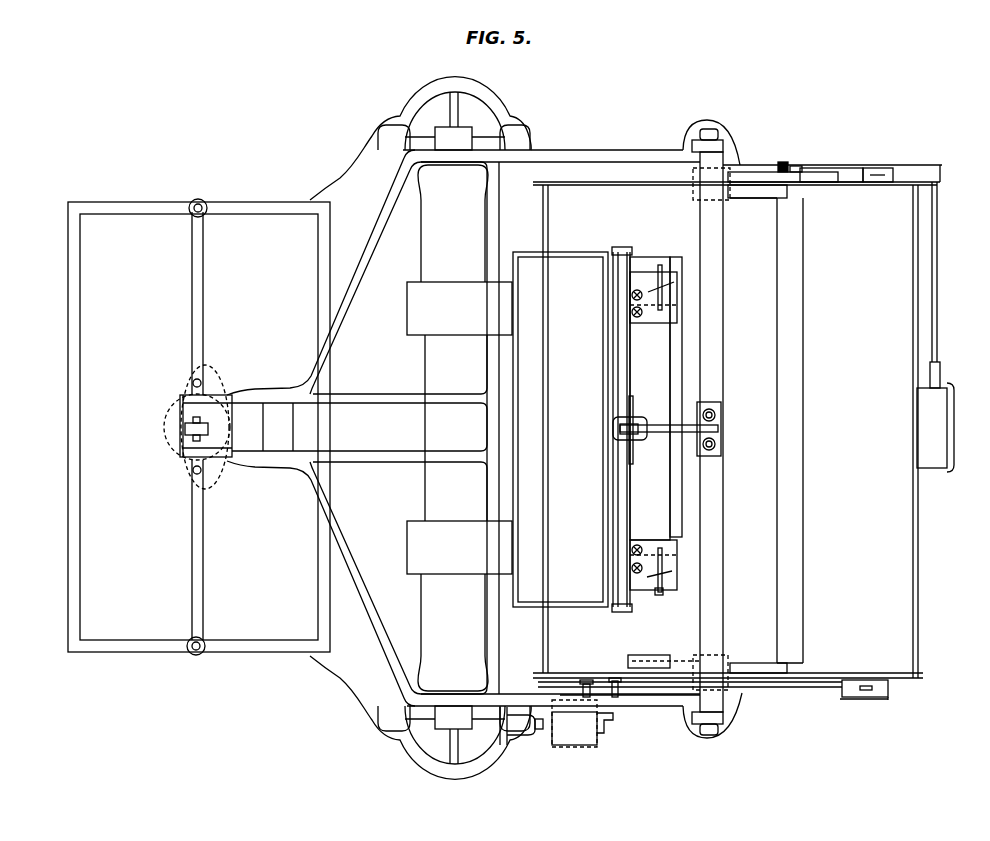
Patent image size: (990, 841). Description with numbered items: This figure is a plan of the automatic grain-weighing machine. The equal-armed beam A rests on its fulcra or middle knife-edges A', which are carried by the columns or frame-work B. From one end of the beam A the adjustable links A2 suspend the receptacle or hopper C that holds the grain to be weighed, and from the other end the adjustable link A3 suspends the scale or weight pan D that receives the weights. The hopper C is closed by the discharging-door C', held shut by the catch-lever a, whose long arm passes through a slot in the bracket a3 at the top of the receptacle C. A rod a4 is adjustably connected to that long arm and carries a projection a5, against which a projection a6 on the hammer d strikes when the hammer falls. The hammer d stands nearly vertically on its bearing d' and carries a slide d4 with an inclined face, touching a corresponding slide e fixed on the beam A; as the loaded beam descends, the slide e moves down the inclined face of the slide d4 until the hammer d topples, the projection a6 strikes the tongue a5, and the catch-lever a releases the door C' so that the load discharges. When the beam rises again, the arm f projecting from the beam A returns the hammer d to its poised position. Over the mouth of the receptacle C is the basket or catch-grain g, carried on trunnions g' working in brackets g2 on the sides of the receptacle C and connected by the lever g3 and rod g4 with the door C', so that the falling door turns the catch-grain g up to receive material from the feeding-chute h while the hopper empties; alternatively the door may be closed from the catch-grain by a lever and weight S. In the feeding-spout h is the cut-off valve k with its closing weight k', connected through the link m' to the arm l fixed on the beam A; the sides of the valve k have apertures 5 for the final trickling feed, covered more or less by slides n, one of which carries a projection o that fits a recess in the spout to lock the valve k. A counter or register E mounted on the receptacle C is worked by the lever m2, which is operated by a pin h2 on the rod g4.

The equal-armed beam A is at (484, 429).
The fulcra A' is at (420, 428).
The adjustable links A2 is at (726, 132).
The adjustable link A3 is at (185, 430).
The columns B is at (525, 752).
The weighing-receptacle C is at (736, 438).
The discharging-door C' is at (831, 162).
The weight pan D is at (199, 427).
The counter E is at (950, 402).
The catch-lever a is at (893, 170).
The bracket a3 is at (886, 701).
The rod a4 is at (806, 688).
The projection a5 is at (584, 683).
The projection a6 is at (609, 681).
The hammer d is at (574, 723).
The bearing d' is at (580, 762).
The slide d4 is at (602, 738).
The slide e is at (608, 722).
The arm f is at (520, 712).
The catch-grain g is at (774, 430).
The trunnions g' is at (740, 429).
The brackets g2 is at (775, 666).
The lever g3 is at (767, 173).
The rod g4 is at (793, 170).
The feeding-chute h is at (560, 429).
The pin h2 is at (782, 163).
The cut-off valve k is at (641, 429).
The weight k' is at (673, 397).
The arm l is at (648, 436).
The link m' is at (637, 418).
The lever m2 is at (873, 173).
The slides n is at (675, 288).
The projection o is at (656, 591).
The lever and weight S is at (671, 661).
The apertures 5 is at (664, 268).